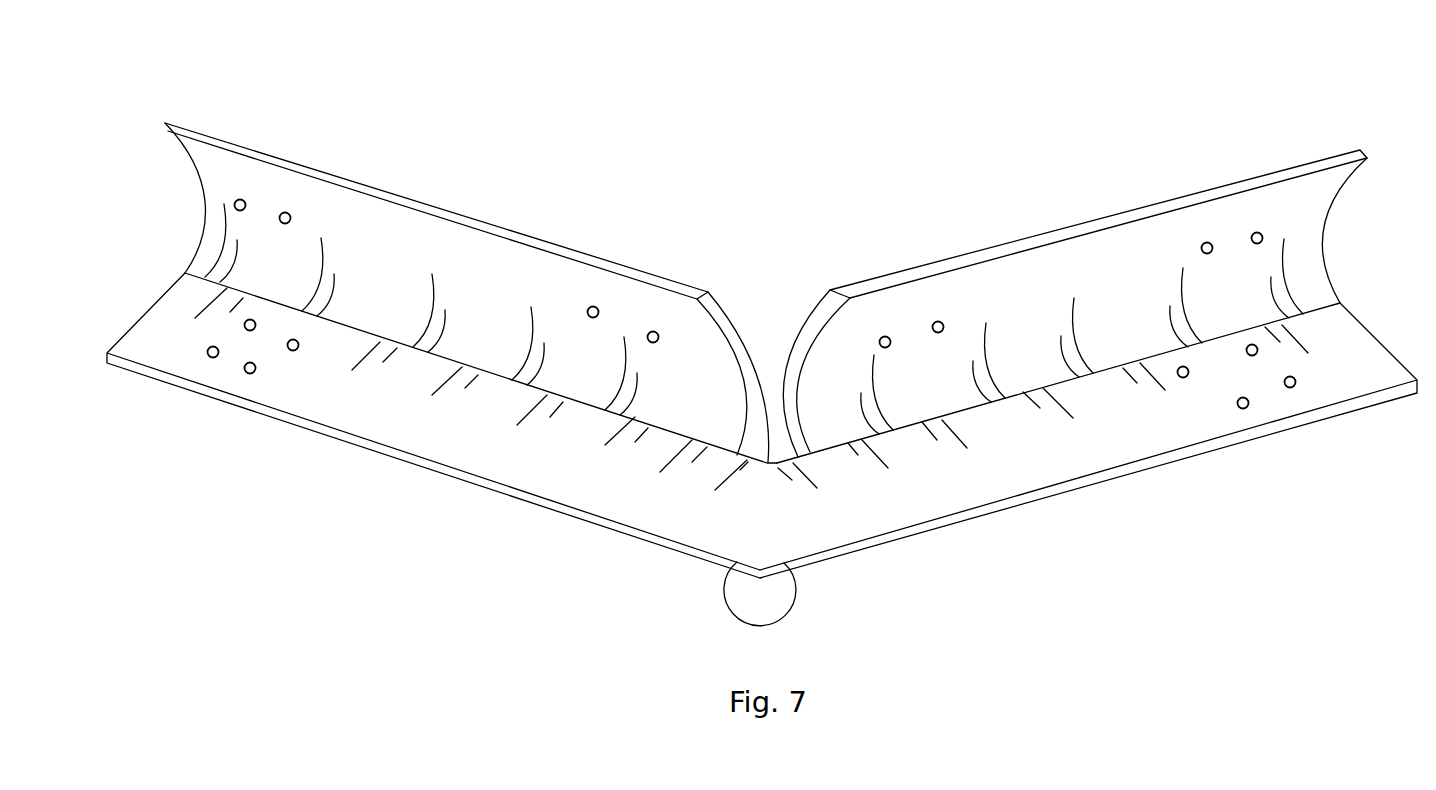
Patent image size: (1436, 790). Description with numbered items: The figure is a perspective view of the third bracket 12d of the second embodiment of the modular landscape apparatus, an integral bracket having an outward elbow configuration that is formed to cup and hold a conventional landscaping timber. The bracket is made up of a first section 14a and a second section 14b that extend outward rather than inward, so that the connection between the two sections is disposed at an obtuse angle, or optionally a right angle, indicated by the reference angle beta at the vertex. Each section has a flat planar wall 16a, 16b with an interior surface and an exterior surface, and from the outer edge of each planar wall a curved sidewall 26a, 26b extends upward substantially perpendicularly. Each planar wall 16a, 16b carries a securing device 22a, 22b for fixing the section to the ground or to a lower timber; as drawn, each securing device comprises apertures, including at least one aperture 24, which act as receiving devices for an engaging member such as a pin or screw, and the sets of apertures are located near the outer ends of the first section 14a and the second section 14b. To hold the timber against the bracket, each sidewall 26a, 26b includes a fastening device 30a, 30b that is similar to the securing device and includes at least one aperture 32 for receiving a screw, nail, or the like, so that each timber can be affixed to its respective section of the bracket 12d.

The third bracket 12d is at (762, 361).
The first section 14a is at (433, 428).
The second section 14b is at (1088, 440).
The flat planar wall 16a is at (507, 463).
The flat planar wall 16b is at (1182, 437).
The securing device 22a is at (229, 385).
The securing device 22b is at (1284, 403).
The aperture 24 is at (1250, 410).
The sidewall 26a is at (471, 283).
The sidewall 26b is at (1072, 306).
The fastening device 30a is at (626, 308).
The fastening device 30b is at (913, 323).
The aperture 32 is at (245, 199).